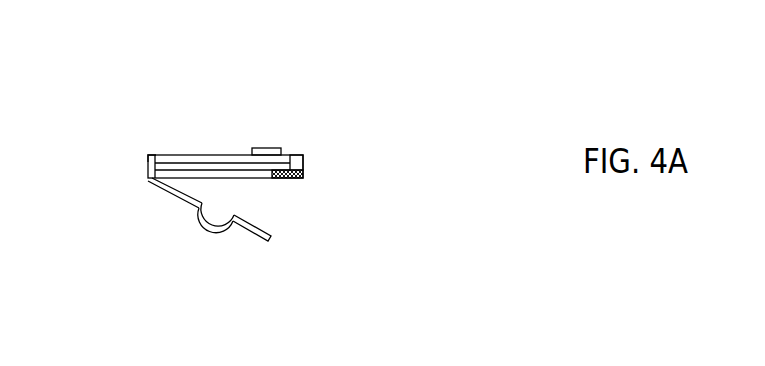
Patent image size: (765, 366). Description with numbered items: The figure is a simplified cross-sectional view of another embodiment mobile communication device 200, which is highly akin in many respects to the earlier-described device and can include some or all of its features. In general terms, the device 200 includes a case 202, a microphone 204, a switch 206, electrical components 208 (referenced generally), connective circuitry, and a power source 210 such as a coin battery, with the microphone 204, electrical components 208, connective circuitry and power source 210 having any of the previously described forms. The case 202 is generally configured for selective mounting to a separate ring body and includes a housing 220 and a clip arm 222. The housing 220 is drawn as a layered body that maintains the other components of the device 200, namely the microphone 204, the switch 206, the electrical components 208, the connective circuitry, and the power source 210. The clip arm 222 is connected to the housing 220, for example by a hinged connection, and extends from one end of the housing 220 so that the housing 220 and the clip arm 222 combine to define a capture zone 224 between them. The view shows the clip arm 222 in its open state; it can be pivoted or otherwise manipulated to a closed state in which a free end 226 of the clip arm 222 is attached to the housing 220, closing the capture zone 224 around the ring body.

The mobile communication device 200 is at (118, 66).
The case 202 is at (137, 172).
The microphone 204 is at (312, 180).
The switch 206 is at (286, 142).
The electrical components 208 is at (166, 153).
The power source 210 is at (213, 156).
The housing 220 is at (138, 153).
The clip arm 222 is at (201, 236).
The capture zone 224 is at (246, 200).
The free end 226 is at (259, 270).